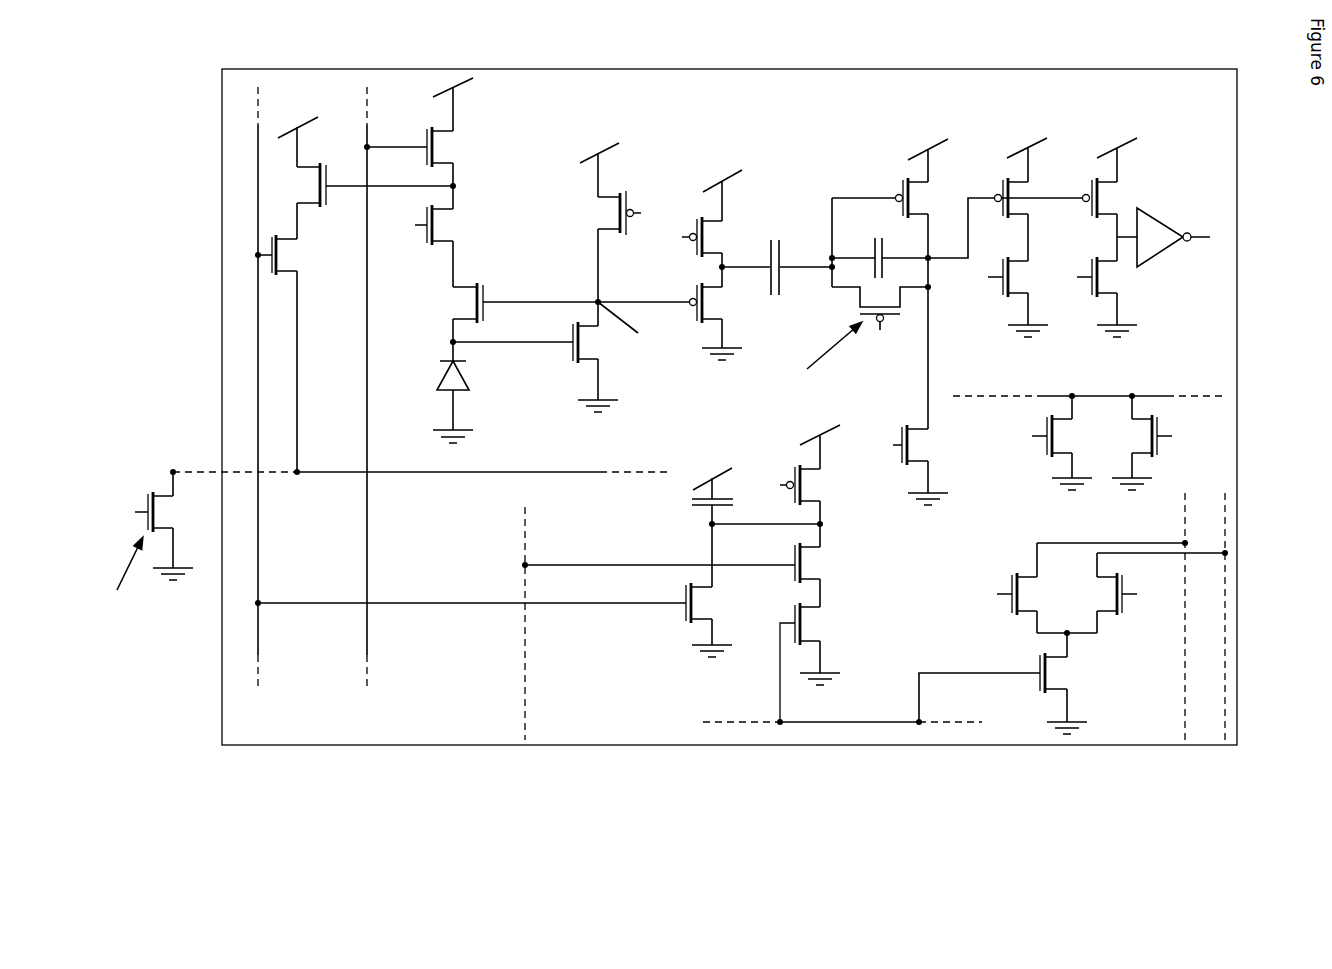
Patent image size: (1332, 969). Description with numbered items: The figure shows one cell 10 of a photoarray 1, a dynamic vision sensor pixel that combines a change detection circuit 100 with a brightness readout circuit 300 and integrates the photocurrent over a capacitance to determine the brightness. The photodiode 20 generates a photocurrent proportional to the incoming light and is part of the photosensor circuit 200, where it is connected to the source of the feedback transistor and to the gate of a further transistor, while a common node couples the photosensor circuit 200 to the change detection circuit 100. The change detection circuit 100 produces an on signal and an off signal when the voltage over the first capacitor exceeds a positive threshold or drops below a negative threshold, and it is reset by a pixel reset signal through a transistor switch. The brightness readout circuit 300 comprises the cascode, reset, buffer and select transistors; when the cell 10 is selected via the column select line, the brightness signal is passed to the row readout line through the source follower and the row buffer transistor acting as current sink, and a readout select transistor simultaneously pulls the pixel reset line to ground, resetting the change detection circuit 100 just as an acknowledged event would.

The photoarray 1 is at (390, 43).
The cell 10 is at (1076, 98).
The photodiode 20 is at (452, 377).
The change detection circuit 100 is at (945, 105).
The photosensor circuit 200 is at (615, 114).
The brightness readout circuit 300 is at (498, 114).